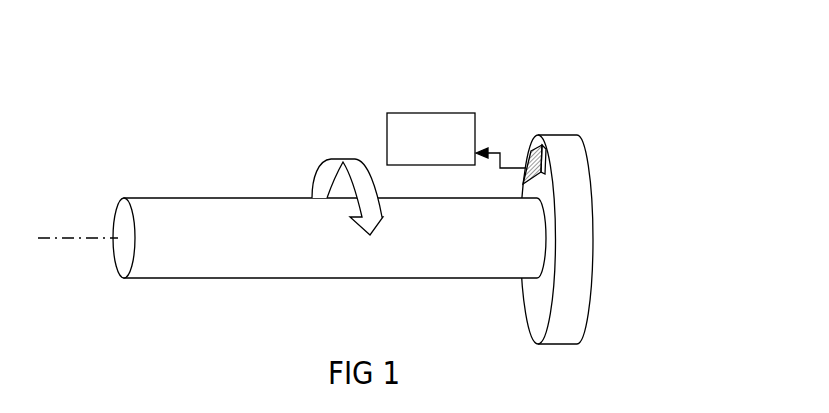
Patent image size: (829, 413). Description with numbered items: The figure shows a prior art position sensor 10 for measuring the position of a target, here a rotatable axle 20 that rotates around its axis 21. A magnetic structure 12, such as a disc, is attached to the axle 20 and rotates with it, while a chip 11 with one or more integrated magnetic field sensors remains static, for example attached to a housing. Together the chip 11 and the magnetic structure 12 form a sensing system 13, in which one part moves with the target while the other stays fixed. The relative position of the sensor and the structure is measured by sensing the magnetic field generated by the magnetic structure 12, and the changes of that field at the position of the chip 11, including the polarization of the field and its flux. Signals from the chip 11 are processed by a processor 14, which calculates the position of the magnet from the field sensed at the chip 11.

The position sensor 10 is at (697, 119).
The chip 11 is at (530, 151).
The magnetic structure 12 is at (568, 155).
The sensing system 13 is at (500, 72).
The processor 14 is at (412, 150).
The axle 20 is at (212, 207).
The axis 21 is at (70, 220).